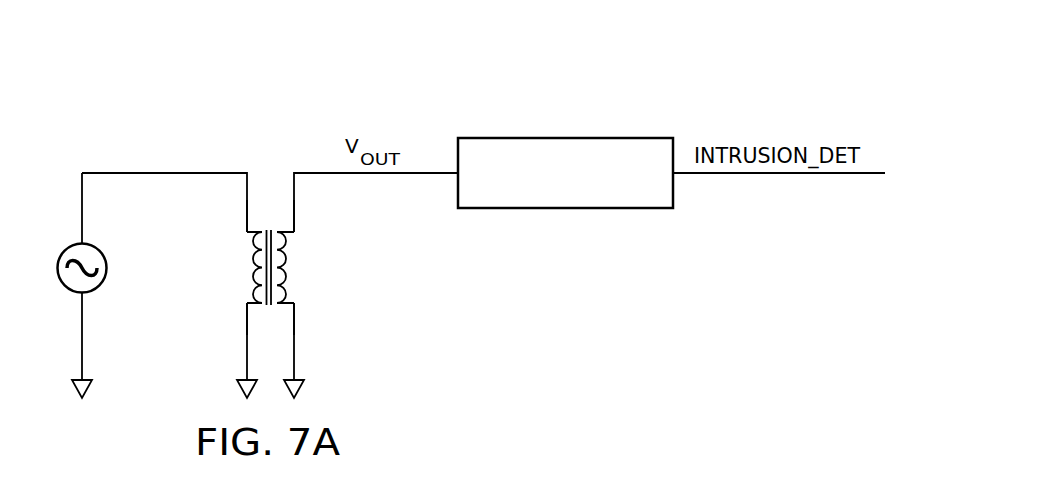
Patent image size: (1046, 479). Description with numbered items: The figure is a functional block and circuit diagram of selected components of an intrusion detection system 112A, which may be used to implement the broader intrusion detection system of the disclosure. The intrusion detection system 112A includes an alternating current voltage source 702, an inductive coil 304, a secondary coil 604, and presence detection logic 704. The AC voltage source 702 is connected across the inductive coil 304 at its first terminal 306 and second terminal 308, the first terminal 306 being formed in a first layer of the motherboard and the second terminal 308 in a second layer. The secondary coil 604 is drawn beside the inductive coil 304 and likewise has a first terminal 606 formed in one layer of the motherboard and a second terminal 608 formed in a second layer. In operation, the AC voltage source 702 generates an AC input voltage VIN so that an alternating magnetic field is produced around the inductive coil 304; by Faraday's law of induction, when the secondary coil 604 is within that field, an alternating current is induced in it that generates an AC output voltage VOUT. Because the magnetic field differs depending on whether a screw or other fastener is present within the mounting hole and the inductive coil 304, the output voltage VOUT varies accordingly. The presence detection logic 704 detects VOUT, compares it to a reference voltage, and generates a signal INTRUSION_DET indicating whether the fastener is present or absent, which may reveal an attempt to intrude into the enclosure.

The intrusion detection system 112A is at (334, 75).
The alternating current (AC) voltage source 702 is at (93, 290).
The inductive coil 304 is at (257, 258).
The second terminal 308 is at (246, 220).
The first terminal 306 is at (246, 315).
The secondary coil 604 is at (283, 278).
The second terminal 608 is at (294, 222).
The first terminal 606 is at (294, 315).
The presence detection logic 704 is at (566, 138).